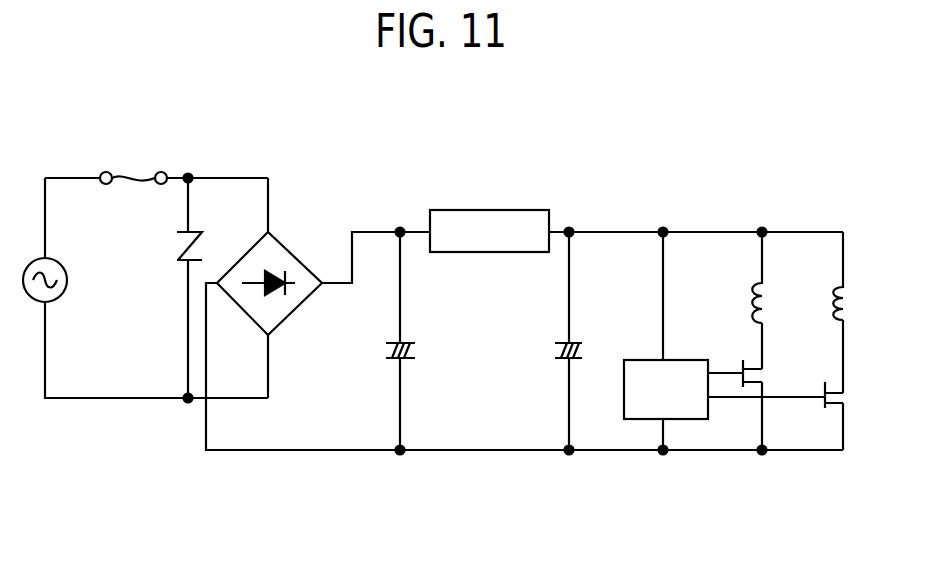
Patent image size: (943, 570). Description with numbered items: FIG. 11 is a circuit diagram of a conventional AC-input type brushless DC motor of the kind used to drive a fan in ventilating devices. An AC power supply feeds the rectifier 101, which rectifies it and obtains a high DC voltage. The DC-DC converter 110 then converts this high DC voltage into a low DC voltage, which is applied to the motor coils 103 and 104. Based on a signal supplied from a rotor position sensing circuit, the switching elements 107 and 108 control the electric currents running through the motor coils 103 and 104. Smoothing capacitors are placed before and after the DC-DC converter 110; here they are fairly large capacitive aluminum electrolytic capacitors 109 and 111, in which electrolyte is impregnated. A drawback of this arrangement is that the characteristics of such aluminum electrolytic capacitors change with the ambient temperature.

The rectifier 101 is at (277, 327).
The motor coil 103 is at (768, 297).
The motor coil 104 is at (852, 298).
The switching element 107 is at (743, 352).
The switching element 108 is at (832, 407).
The aluminum electrolytic capacitor 109 is at (390, 365).
The DC-DC converter 110 is at (497, 210).
The aluminum electrolytic capacitor 111 is at (560, 363).